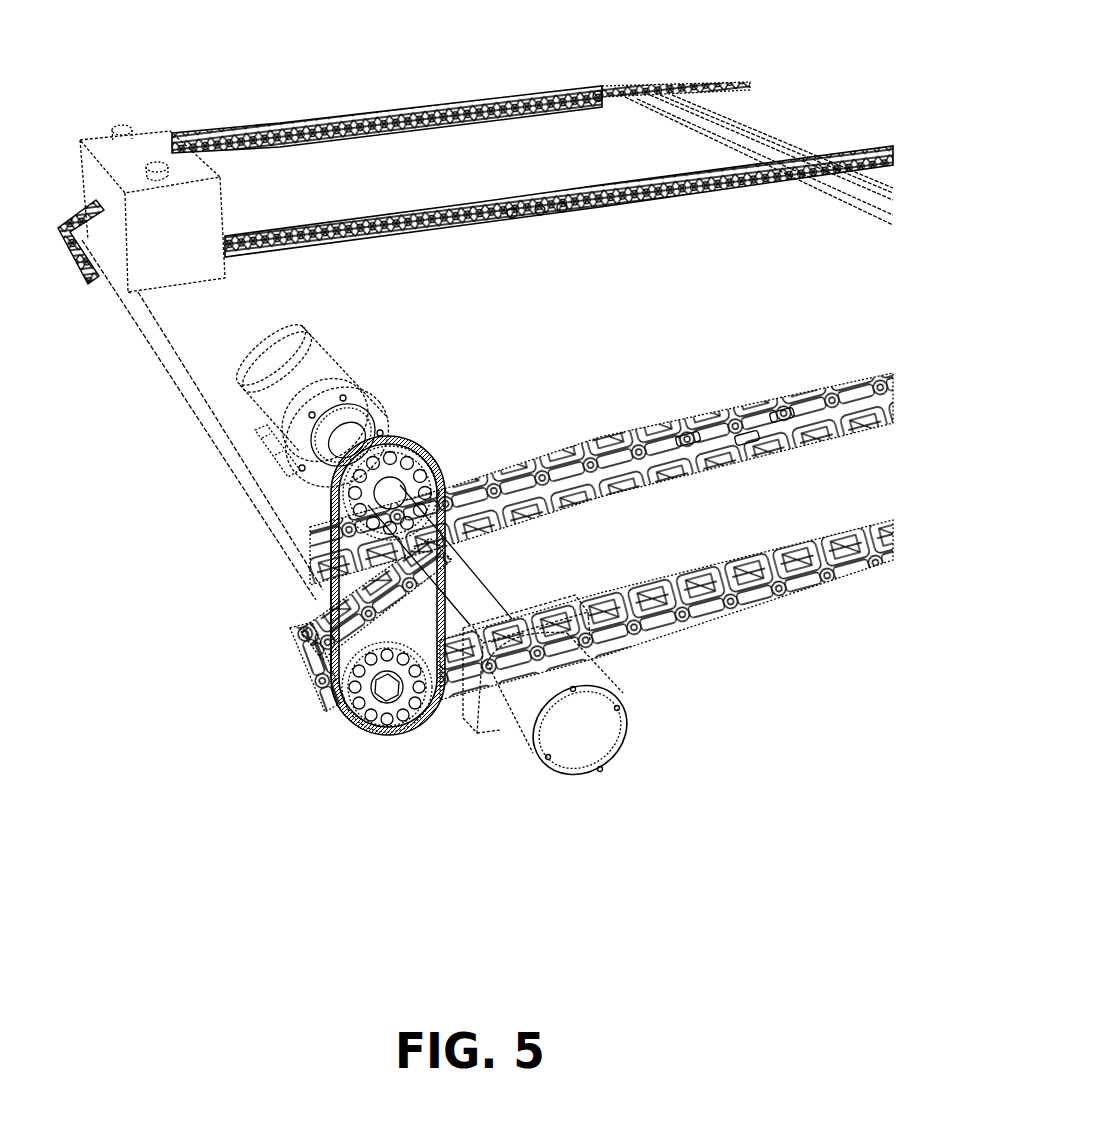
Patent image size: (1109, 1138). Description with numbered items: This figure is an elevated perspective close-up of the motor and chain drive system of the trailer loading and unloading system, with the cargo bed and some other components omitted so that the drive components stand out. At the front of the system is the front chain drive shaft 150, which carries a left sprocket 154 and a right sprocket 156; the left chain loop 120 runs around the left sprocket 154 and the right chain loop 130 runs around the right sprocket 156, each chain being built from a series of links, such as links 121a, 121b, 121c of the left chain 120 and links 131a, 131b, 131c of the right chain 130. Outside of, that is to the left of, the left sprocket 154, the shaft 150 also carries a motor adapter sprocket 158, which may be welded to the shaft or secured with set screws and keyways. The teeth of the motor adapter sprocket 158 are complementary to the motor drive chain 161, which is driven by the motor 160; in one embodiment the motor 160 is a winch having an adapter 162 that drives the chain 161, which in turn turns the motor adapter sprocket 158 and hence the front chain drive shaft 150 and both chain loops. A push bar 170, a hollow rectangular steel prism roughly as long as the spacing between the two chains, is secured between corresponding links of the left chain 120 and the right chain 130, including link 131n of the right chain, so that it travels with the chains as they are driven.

The left chain loop 120 is at (748, 620).
The link in left chain 121a is at (688, 438).
The link in left chain 121b is at (747, 437).
The link in left chain 121c is at (782, 414).
The right chain loop 130 is at (430, 230).
The link in right chain 131a is at (512, 212).
The link in right chain 131b is at (540, 210).
The link in right chain 131c is at (561, 208).
The link in right chain 131n is at (600, 94).
The front chain drive shaft 150 is at (295, 566).
The left sprocket on front chain drive shaft 154 is at (410, 633).
The right sprocket on front chain drive shaft 156 is at (90, 256).
The motor adapter sprocket 158 is at (367, 499).
The motor 160 is at (272, 365).
The motor drive chain 161 is at (331, 541).
The adapter for front chain drive shaft 162 is at (368, 702).
The push bar 170 is at (653, 120).